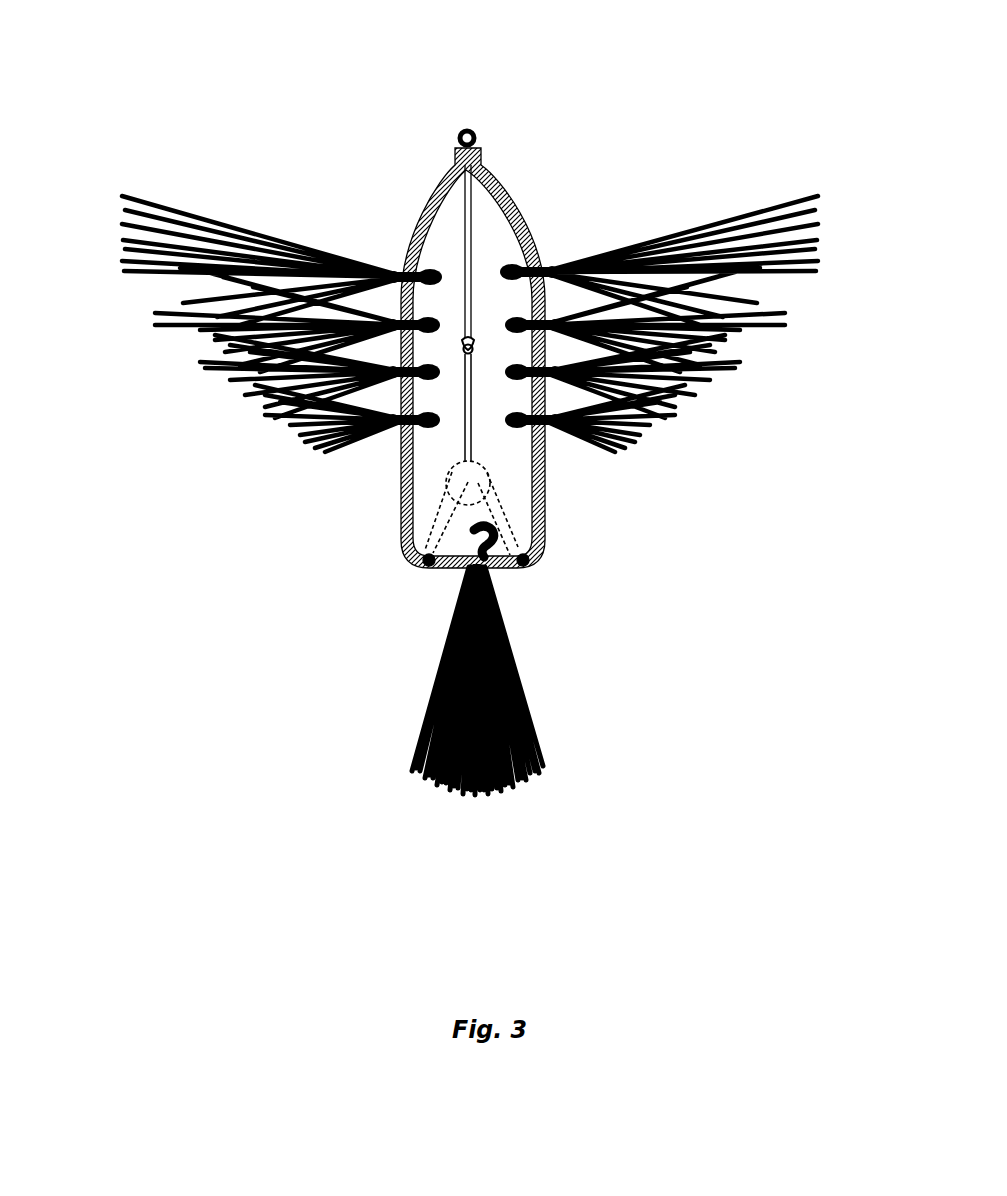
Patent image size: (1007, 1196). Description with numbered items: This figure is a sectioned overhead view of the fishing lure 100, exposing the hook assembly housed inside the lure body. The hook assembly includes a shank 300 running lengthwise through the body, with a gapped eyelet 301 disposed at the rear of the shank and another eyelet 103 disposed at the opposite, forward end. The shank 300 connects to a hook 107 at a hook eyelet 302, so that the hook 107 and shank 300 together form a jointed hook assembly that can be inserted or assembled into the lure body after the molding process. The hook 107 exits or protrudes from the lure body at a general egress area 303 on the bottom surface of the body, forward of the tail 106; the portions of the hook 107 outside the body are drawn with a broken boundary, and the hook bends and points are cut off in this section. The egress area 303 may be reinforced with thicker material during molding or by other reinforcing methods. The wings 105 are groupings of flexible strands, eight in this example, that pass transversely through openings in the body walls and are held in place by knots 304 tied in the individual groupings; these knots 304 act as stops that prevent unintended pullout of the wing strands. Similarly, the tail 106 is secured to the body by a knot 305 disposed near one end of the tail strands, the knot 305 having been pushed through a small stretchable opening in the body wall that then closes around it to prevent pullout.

The fishing lure 100 is at (546, 88).
The eyelet 103 is at (468, 129).
The wings 105 is at (286, 230).
The tail 106 is at (378, 782).
The hook 107 is at (467, 453).
The shank 300 is at (472, 217).
The gapped eyelet 301 is at (463, 352).
The hook eyelet 302 is at (474, 356).
The egress area 303 is at (490, 478).
The knots 304 is at (425, 328).
The knot 305 is at (487, 557).